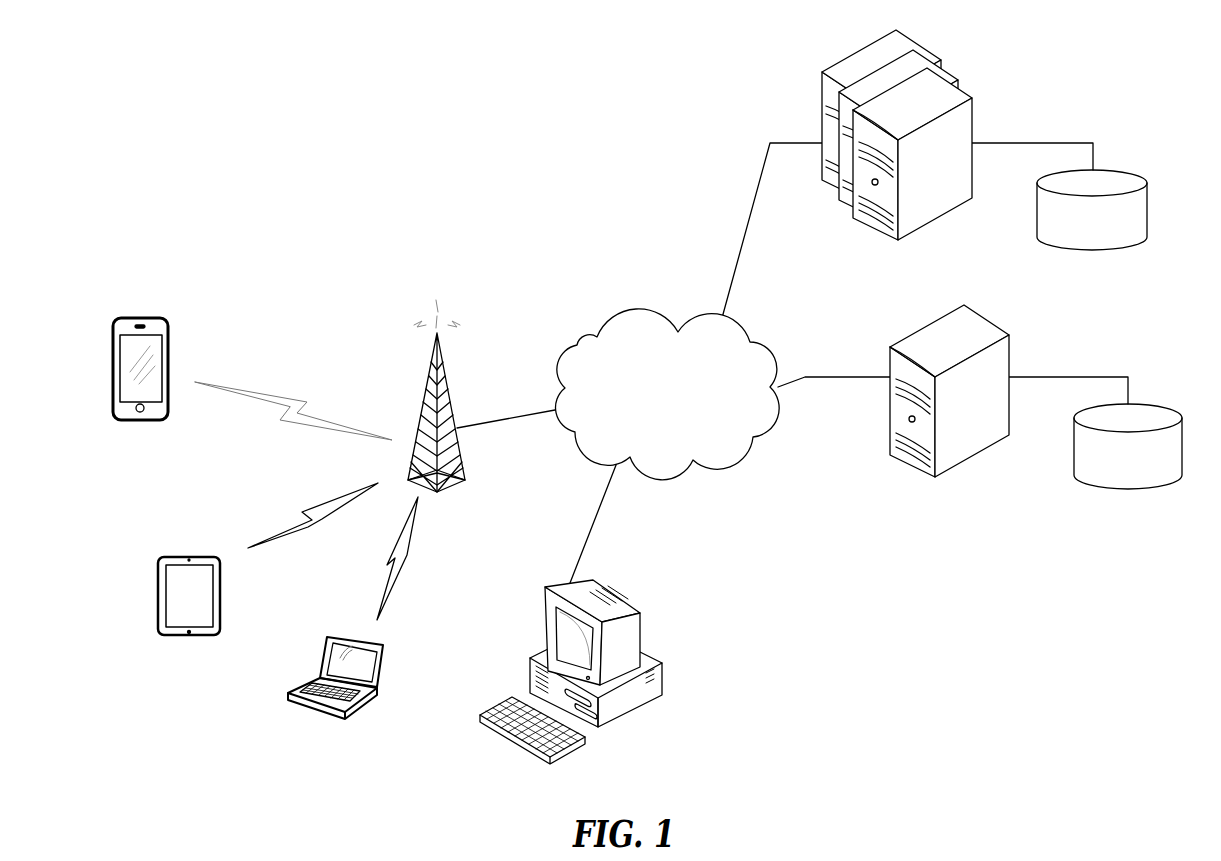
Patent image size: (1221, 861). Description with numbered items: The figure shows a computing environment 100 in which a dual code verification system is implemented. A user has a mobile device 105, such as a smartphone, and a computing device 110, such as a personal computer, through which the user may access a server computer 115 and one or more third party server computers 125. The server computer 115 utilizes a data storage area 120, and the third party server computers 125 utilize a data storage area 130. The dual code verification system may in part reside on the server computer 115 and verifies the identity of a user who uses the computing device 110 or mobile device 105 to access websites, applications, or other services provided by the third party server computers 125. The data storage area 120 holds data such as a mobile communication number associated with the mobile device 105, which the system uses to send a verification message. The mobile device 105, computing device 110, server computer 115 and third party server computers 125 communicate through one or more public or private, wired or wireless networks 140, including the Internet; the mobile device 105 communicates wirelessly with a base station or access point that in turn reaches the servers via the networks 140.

The computing environment 100 is at (326, 183).
The mobile device 105 is at (140, 318).
The computing device 110 is at (640, 638).
The server computer 115 is at (953, 468).
The data storage area 120 is at (1160, 405).
The third party server computers 125 is at (937, 63).
The data storage area 130 is at (1117, 167).
The networks 140 is at (675, 473).